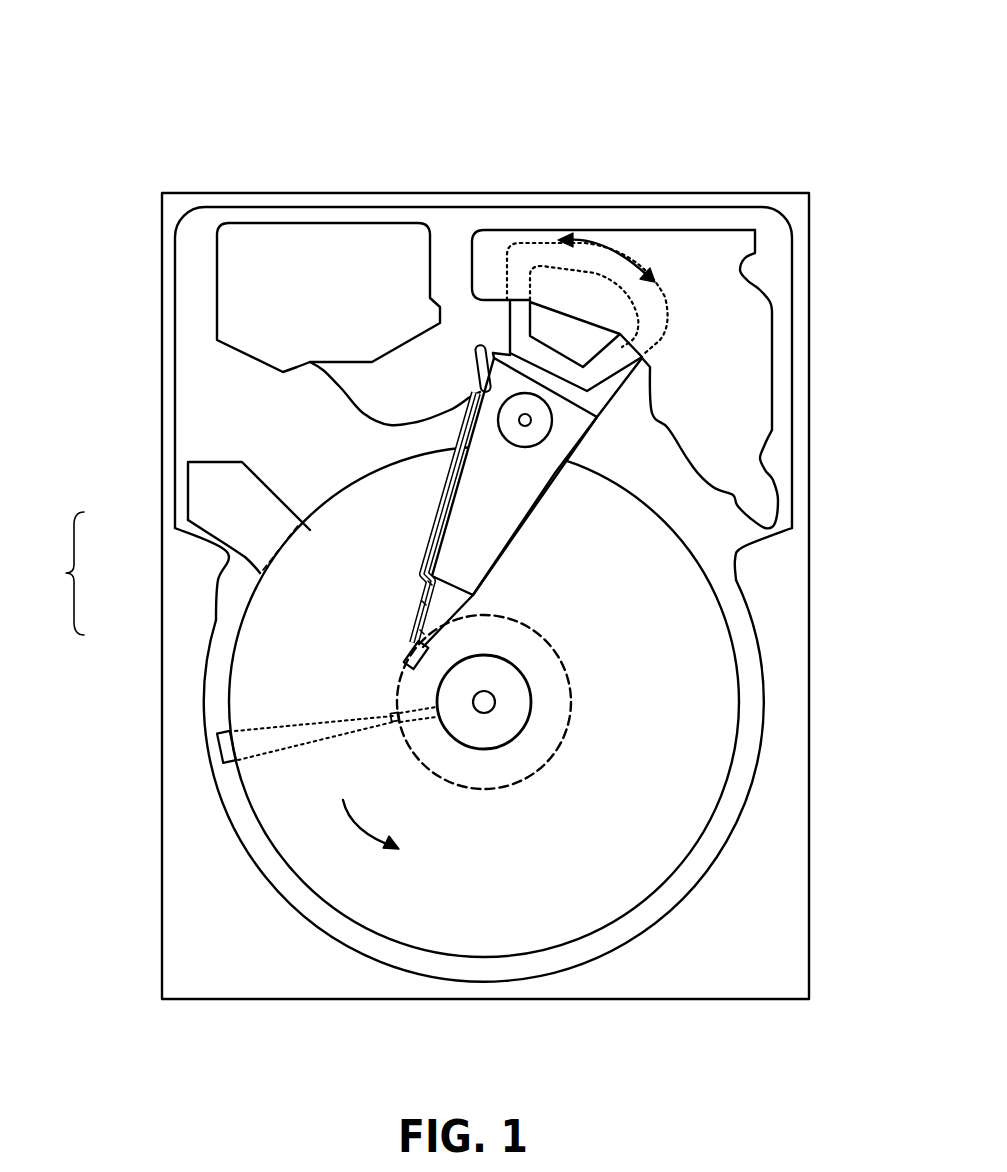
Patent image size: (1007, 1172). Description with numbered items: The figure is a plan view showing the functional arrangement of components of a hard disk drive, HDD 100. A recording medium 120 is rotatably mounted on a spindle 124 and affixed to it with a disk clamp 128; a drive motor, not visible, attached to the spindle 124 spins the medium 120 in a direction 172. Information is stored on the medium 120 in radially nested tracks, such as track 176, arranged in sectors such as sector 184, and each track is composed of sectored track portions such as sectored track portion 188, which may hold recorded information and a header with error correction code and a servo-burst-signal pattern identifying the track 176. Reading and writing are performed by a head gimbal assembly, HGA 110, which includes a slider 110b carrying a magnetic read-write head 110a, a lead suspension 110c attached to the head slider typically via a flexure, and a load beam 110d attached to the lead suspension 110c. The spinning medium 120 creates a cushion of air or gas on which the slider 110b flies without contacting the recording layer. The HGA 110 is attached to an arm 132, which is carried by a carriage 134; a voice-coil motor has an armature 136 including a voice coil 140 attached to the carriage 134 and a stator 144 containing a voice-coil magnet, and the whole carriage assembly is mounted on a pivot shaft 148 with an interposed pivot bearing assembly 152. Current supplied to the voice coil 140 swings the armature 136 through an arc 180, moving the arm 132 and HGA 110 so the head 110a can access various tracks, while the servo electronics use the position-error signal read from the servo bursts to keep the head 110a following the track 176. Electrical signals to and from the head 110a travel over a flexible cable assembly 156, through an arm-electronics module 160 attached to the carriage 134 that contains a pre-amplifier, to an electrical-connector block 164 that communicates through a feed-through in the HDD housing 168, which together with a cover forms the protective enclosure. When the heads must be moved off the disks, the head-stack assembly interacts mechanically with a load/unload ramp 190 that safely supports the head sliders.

The hard disk drive 100 is at (90, 73).
The head gimbal assembly 110 is at (227, 591).
The magnetic read-write head 110a is at (403, 669).
The slider 110b is at (420, 632).
The lead suspension 110c is at (422, 603).
The load beam 110d is at (428, 583).
The recording medium 120 is at (670, 652).
The spindle 124 is at (495, 697).
The disk clamp 128 is at (510, 718).
The arm 132 is at (477, 537).
The carriage 134 is at (543, 453).
The armature 136 is at (503, 335).
The voice coil 140 is at (520, 313).
The stator 144 is at (737, 323).
The pivot shaft 148 is at (529, 420).
The pivot bearing assembly 152 is at (537, 433).
The flexible cable assembly 156 is at (340, 395).
The arm-electronics module 160 is at (477, 390).
The electrical-connector block 164 is at (242, 295).
The HDD housing 168 is at (790, 207).
The direction 172 is at (380, 827).
The track 176 is at (560, 663).
The arc 180 is at (603, 247).
The sector 184 is at (213, 748).
The sectored track portion 188 is at (393, 717).
The load/unload ramp 190 is at (197, 478).